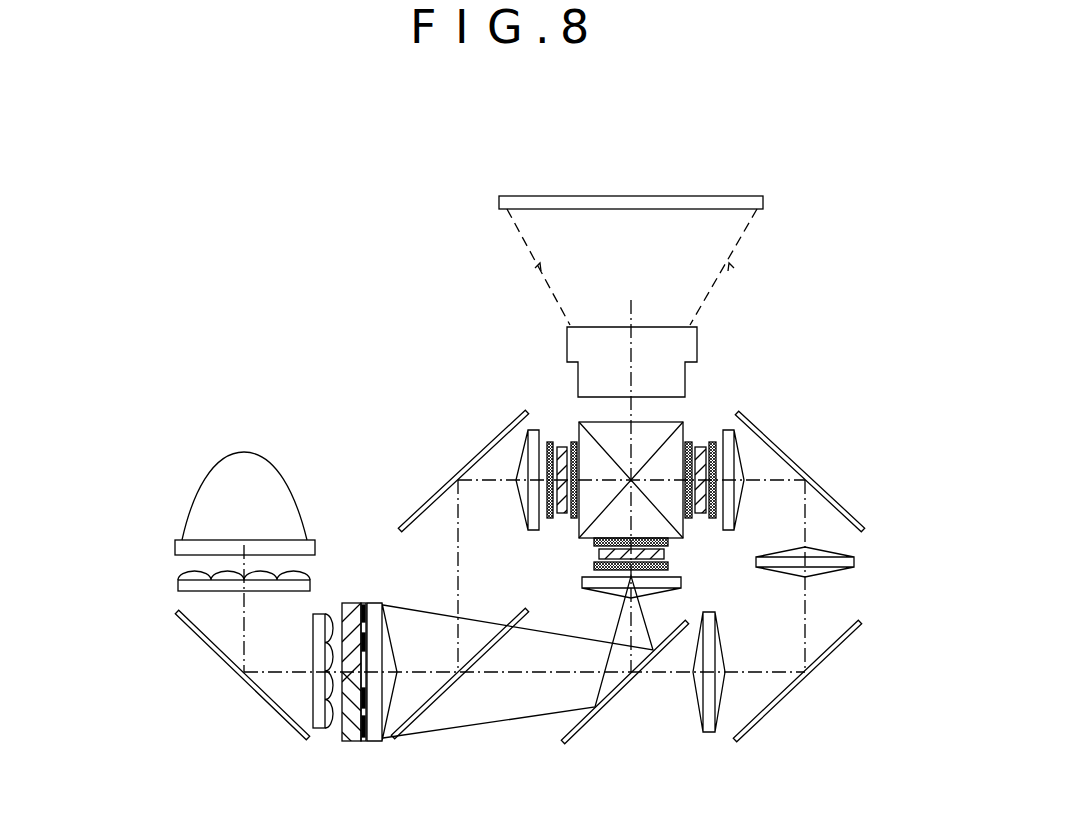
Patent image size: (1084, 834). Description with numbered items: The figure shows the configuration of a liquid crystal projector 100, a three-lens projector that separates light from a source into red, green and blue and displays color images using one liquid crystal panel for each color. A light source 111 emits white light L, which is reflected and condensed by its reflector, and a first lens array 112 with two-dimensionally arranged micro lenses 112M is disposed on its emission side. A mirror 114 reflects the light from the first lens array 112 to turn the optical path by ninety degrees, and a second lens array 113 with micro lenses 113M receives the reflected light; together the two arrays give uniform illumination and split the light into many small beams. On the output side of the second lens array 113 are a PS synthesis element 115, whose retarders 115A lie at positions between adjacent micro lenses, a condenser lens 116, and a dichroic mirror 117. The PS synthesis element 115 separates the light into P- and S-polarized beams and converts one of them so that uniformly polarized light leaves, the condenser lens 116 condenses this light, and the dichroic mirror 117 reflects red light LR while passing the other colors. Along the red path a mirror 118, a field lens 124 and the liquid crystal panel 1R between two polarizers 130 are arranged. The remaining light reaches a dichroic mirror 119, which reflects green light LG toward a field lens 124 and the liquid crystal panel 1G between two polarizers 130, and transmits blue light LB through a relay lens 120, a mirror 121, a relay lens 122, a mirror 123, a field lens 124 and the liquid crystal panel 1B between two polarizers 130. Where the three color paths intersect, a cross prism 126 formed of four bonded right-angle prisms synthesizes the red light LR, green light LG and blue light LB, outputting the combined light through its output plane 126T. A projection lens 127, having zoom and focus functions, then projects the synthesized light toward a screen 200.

The liquid crystal projector 100 is at (312, 342).
The light source 111 is at (210, 462).
The first lens array 112 is at (178, 585).
The micro lenses 112M is at (190, 572).
The second lens array 113 is at (318, 738).
The micro lenses 113M is at (330, 730).
The mirror 114 is at (225, 660).
The PS synthesis element 115 is at (353, 742).
The retarders 115A is at (365, 742).
The condenser lens 116 is at (372, 745).
The dichroic mirror 117 is at (443, 695).
The mirror 118 is at (425, 500).
The dichroic mirror 119 is at (608, 703).
The relay lens 120 is at (709, 735).
The mirror 121 is at (785, 700).
The relay lens 122 is at (855, 562).
The mirror 123 is at (843, 500).
The field lens 124 is at (517, 492).
The cross prism 126 is at (684, 530).
The output plane 126T is at (607, 420).
The projection lens 127 is at (697, 340).
The polarizers 130 is at (548, 440).
The screen 200 is at (712, 196).
The liquid crystal panel 1R is at (560, 445).
The liquid crystal panel 1G is at (599, 555).
The liquid crystal panel 1B is at (700, 445).
The light L is at (245, 625).
The red light LR is at (456, 578).
The green light LG is at (631, 618).
The blue light LB is at (663, 672).